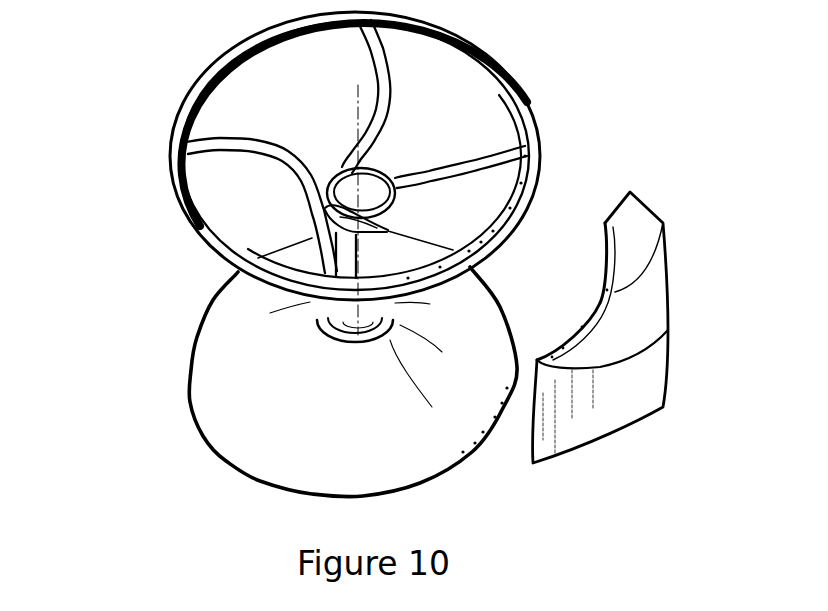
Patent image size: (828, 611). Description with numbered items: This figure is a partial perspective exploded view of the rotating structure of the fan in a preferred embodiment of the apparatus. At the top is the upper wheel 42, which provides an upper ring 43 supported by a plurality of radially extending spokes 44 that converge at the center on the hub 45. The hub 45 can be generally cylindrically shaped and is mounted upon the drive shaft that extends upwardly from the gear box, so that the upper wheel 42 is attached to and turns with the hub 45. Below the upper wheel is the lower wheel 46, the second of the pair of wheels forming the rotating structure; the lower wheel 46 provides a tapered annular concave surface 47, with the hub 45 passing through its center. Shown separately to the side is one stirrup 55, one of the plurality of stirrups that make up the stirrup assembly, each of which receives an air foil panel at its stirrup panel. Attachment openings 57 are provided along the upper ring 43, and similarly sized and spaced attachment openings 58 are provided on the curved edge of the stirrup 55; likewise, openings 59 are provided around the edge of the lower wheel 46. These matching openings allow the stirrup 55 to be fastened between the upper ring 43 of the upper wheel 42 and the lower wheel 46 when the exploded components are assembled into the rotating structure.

The upper wheel 42 is at (519, 71).
The upper ring 43 is at (194, 67).
The spokes 44 is at (361, 78).
The hub 45 is at (414, 201).
The lower wheel 46 is at (219, 457).
The tapered annular concave surface 47 is at (218, 349).
The stirrup 55 is at (679, 373).
The attachment openings 57 is at (552, 169).
The attachment openings 58 is at (578, 295).
The openings 59 is at (474, 463).